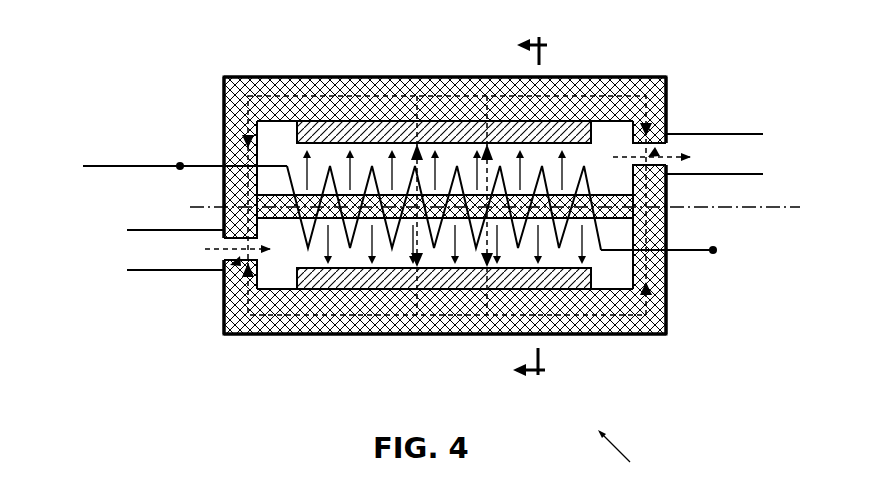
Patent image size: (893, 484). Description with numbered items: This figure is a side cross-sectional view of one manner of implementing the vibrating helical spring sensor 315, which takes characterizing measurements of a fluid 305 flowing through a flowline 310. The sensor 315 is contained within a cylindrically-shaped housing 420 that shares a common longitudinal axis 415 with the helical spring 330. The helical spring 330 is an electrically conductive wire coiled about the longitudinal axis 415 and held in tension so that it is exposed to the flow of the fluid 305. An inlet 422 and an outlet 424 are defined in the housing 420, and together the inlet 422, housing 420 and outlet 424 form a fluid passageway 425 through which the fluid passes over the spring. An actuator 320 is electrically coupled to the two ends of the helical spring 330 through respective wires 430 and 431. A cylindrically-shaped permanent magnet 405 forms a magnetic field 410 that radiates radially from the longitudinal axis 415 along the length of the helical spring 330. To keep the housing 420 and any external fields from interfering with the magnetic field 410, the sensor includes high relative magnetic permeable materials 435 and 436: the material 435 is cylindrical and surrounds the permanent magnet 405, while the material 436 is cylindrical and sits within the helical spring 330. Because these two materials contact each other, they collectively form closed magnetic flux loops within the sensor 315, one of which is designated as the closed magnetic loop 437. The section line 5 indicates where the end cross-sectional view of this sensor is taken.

The fluid 305 is at (200, 245).
The flowline 310 is at (750, 133).
The helical spring sensor 315 is at (630, 462).
The actuator 320 is at (115, 189).
The helical spring 330 is at (332, 180).
The permanent magnet 405 is at (335, 307).
The magnetic field 410 is at (437, 175).
The longitudinal axis 415 is at (773, 207).
The housing 420 is at (452, 335).
The inlet 422 is at (225, 272).
The outlet 424 is at (665, 133).
The fluid passageway 425 is at (620, 337).
The wire 430 is at (145, 163).
The wire 431 is at (742, 250).
The high relative magnetic permeable material 435 is at (580, 87).
The high relative magnetic permeable material 436 is at (665, 268).
The closed magnetic loop 437 is at (228, 335).
The section line 5- 5 is at (530, 206).